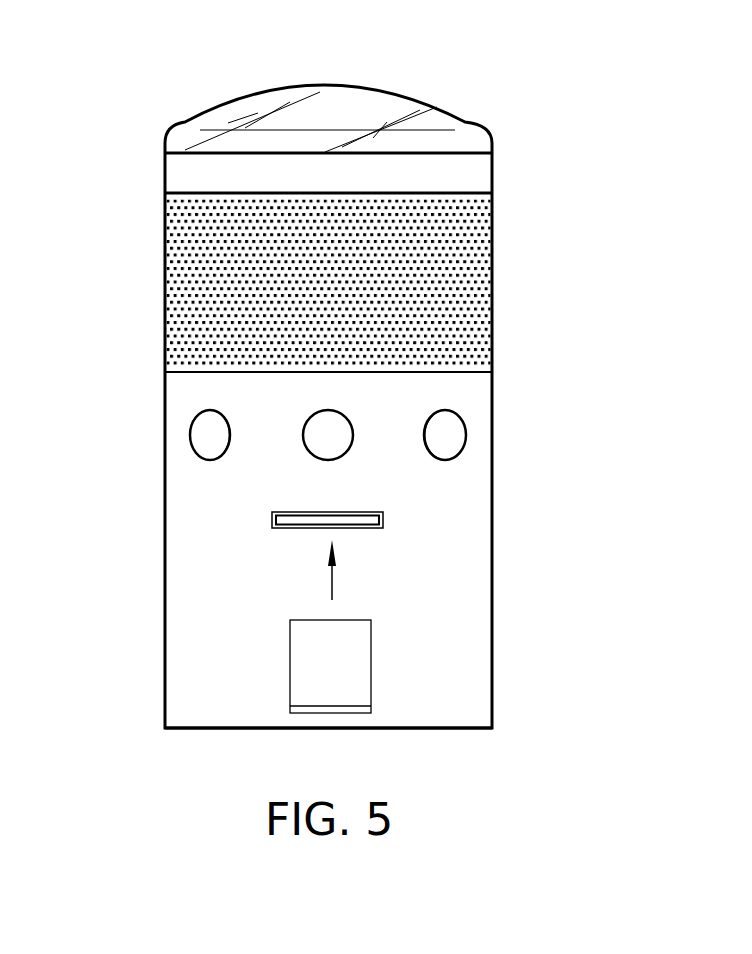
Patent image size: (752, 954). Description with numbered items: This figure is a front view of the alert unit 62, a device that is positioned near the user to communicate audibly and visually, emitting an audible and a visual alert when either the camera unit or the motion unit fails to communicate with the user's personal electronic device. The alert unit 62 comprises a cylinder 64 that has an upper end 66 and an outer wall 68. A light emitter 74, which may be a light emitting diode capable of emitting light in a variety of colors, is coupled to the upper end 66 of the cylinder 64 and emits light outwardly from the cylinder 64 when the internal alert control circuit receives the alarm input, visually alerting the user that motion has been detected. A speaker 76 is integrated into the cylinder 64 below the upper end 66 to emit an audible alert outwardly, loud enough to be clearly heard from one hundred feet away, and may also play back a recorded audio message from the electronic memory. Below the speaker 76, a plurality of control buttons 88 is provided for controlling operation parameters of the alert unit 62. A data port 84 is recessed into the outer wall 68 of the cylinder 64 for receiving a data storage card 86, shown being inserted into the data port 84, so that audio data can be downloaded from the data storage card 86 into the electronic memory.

The alert unit 62 is at (545, 127).
The cylinder 64 is at (492, 657).
The upper end 66 is at (212, 143).
The outer wall 68 is at (423, 728).
The light emitter 74 is at (380, 94).
The speaker 76 is at (190, 262).
The data port 84 is at (275, 520).
The data storage card 86 is at (300, 715).
The control buttons 88 is at (190, 435).